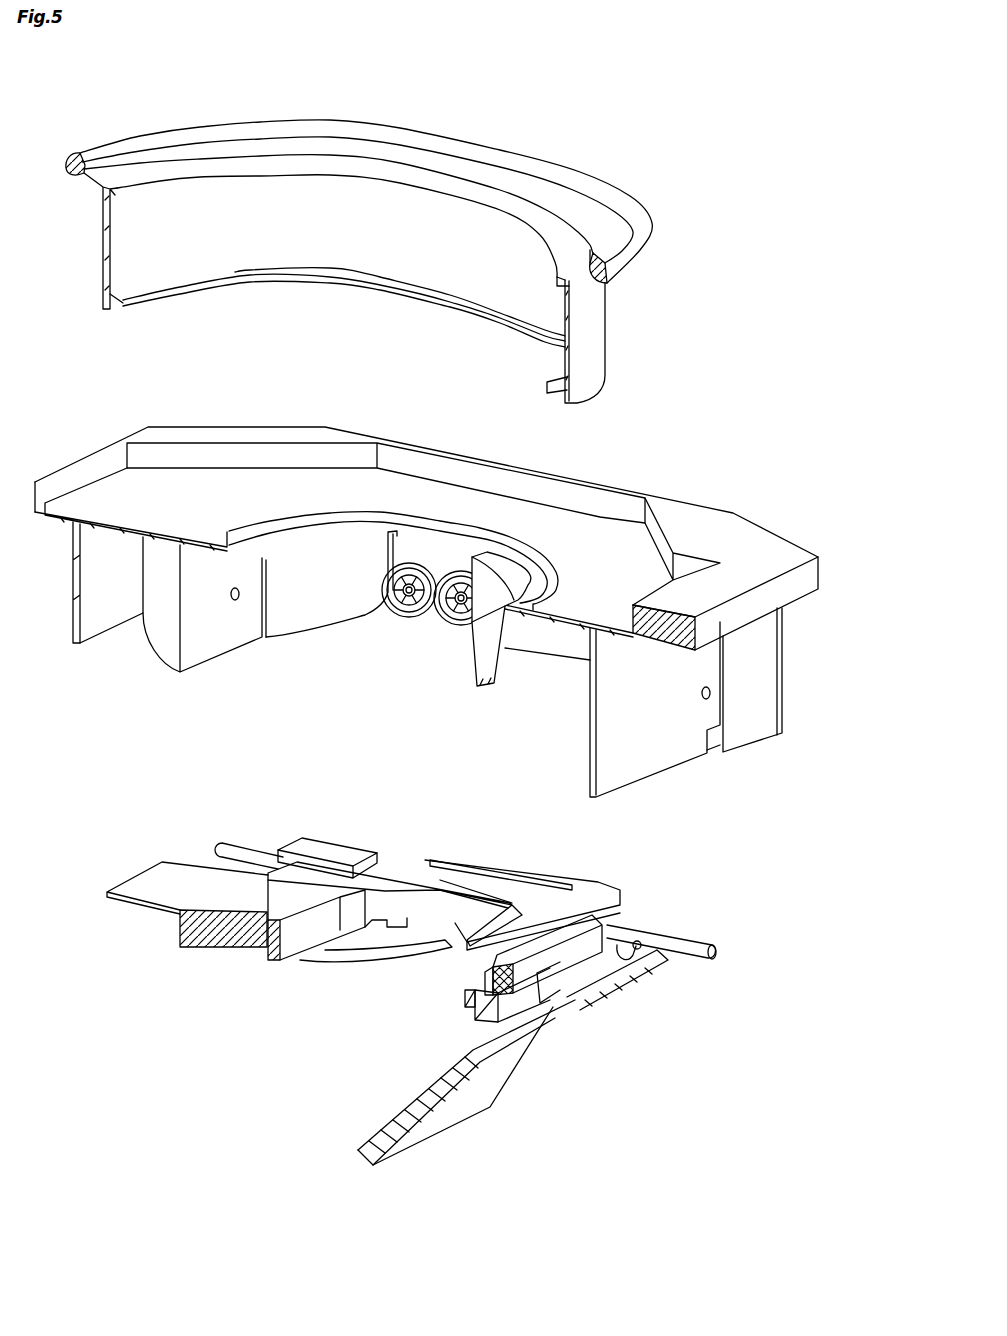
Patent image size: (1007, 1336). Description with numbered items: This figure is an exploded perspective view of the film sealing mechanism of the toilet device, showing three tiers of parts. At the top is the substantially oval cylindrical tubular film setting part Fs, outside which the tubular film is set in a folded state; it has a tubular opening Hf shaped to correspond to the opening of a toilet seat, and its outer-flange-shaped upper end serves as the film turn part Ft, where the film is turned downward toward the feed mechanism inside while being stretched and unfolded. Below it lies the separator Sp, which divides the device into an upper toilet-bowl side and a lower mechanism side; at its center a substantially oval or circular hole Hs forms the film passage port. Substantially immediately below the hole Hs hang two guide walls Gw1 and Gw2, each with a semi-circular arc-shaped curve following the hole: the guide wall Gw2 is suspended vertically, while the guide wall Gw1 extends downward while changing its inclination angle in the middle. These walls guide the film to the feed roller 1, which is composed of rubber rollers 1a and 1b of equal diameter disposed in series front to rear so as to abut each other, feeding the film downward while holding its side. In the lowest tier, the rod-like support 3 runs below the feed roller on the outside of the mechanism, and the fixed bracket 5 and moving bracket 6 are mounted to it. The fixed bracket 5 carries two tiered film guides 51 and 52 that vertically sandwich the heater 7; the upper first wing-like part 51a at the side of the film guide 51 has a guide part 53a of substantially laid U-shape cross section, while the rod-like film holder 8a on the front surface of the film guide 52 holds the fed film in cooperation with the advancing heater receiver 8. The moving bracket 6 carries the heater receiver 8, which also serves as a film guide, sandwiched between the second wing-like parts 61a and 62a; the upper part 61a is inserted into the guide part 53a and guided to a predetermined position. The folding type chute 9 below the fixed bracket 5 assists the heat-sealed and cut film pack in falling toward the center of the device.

The film turn part Ft is at (387, 132).
The tubular opening Hf is at (228, 208).
The tubular film setting part Fs is at (102, 235).
The separator Sp is at (227, 505).
The hole Hs is at (348, 580).
The guide wall Gw2 is at (300, 600).
The guide wall Gw1 is at (478, 622).
The feed roller 1 is at (425, 649).
The rubber roller 1a is at (400, 617).
The rubber roller 1b is at (453, 622).
The rod-like support 3 is at (251, 852).
The fixed bracket 5 is at (601, 994).
The film guide 51 is at (522, 874).
The upper first wing-like part 51a is at (490, 938).
The film guide 52 is at (607, 977).
The guide part 53a is at (470, 878).
The moving bracket 6 is at (229, 966).
The second wing-like part 61a is at (410, 880).
The second wing-like part 62a is at (375, 950).
The heater 7 is at (483, 973).
The heater receiver 8 is at (300, 940).
The film holder 8a is at (468, 1000).
The chute 9 is at (457, 1112).